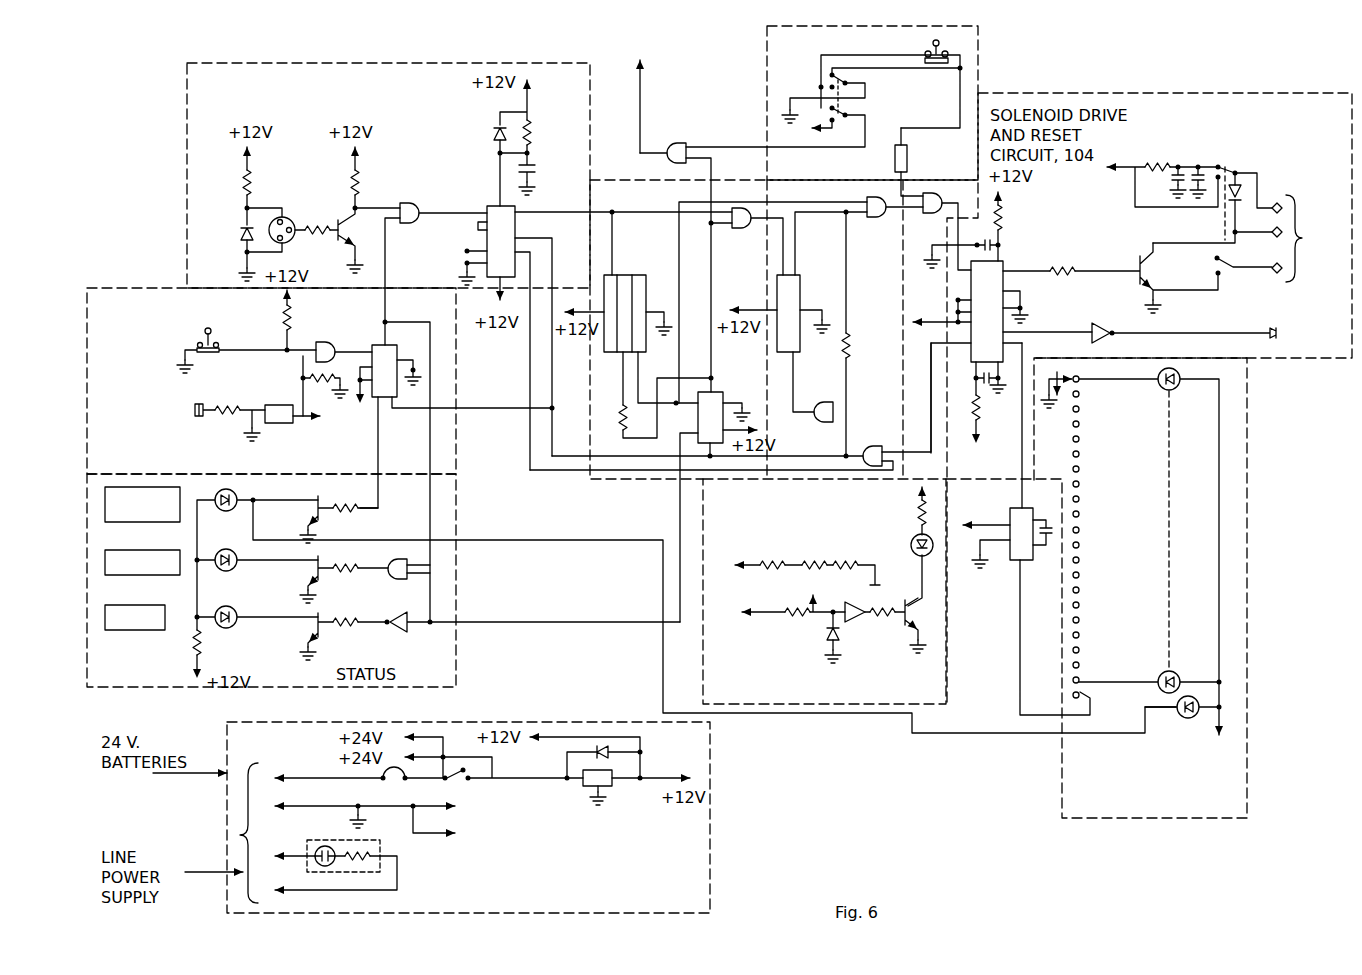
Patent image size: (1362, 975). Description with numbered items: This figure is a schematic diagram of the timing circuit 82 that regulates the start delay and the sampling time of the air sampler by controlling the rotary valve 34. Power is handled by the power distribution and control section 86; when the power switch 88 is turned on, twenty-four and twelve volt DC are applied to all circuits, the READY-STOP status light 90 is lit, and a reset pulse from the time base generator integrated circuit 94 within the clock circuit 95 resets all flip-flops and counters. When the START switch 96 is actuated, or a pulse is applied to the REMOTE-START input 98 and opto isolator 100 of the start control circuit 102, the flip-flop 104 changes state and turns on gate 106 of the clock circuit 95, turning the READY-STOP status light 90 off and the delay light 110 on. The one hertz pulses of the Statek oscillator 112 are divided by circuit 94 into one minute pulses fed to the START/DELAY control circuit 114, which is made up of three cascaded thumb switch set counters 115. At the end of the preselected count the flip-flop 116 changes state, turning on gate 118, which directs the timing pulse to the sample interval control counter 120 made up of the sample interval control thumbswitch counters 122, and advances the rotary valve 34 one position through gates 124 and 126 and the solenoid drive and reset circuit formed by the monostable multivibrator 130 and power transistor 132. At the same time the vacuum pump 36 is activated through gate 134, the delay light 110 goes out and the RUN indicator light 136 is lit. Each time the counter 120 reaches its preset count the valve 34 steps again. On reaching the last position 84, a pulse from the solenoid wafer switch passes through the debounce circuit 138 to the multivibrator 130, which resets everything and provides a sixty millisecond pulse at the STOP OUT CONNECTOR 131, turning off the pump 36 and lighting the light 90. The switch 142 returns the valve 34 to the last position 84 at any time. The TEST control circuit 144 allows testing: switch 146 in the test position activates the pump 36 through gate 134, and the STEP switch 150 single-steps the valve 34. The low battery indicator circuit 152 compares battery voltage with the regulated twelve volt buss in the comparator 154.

The clock circuit 95 is at (388, 175).
The Statek oscillator 112 is at (294, 217).
The gate 106 is at (420, 204).
The time base generator integrated circuit 94 is at (507, 252).
The vacuum pump 36 is at (635, 84).
The gate 134 is at (675, 143).
The switch 146 is at (820, 80).
The STEP switch 150 is at (938, 66).
The TEST control circuit 144 is at (978, 37).
The flip-flop 104 is at (375, 345).
The switch 142 is at (1207, 163).
The power transistor 132 is at (1136, 258).
The dual retriggerable, resetable monostable multivibrator 130 is at (1005, 290).
The STOP OUT CONNECTOR 131 is at (1237, 333).
The START switch 96 is at (200, 340).
The REMOTE-START input 98 is at (228, 405).
The opto isolator 100 is at (284, 424).
The start control circuit 102 is at (271, 381).
The thumb switch set counters in cascade 115 is at (628, 275).
The flip-flop 116 is at (736, 382).
The gate 118 is at (742, 228).
The sample interval control thumbswitch counters 122 is at (800, 285).
The gate 124 is at (874, 218).
The gate 126 is at (934, 214).
The START/DELAY control circuit 114 is at (598, 434).
The sample interval control counter 120 is at (788, 474).
The READY-STOP status light 90 is at (123, 524).
The delay light 110 is at (125, 577).
The RUN indicator light 136 is at (125, 632).
The low battery indicator circuit 152 is at (824, 594).
The comparator 154 is at (880, 592).
The debounce circuit 138 is at (1027, 562).
The last position 84 is at (1092, 702).
The timing circuit 82 is at (1250, 622).
The rotary valve 34 is at (1096, 588).
The power switch 88 is at (465, 783).
The power distribution and control section 86 is at (468, 817).